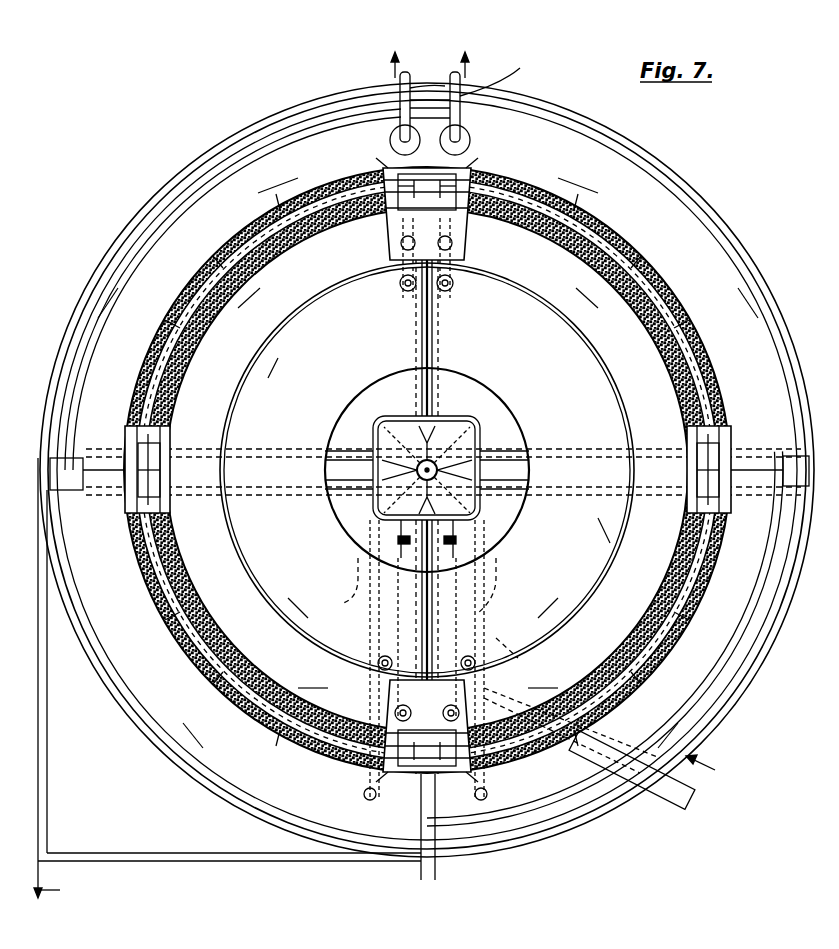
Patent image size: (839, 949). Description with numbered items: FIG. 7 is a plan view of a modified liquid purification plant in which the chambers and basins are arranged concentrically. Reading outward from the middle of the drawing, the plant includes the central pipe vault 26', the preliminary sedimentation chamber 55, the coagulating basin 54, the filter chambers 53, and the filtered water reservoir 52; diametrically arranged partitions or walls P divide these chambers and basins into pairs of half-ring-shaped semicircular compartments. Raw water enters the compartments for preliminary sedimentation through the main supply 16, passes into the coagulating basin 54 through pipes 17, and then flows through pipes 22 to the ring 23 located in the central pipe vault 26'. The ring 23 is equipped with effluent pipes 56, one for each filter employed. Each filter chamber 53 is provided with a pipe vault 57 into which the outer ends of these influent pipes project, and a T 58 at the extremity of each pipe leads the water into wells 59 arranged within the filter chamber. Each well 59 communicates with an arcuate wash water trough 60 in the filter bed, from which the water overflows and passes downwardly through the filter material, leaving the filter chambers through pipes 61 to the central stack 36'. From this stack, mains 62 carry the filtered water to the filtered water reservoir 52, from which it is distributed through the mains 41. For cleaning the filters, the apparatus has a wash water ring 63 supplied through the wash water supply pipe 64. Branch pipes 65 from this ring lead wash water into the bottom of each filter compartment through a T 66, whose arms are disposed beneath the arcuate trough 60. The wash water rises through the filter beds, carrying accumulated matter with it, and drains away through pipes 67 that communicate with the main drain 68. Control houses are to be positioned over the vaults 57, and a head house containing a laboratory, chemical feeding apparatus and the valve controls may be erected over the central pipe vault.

The main supply 16 is at (688, 797).
The pipes 17 is at (457, 290).
The pipes 22 is at (452, 552).
The ring 23 is at (460, 418).
The central pipe vault 26' is at (444, 470).
The central stack 36' is at (459, 439).
The mains 41 is at (457, 74).
The filtered water reservoir 52 is at (272, 718).
The filter chambers 53 is at (590, 222).
The coagulating basin 54 is at (662, 569).
The preliminary sedimentation chamber 55 is at (427, 470).
The effluent pipes 56 is at (434, 385).
The pipe vault 57 is at (394, 770).
The T 58 is at (397, 212).
The wells 59 is at (388, 172).
The arcuate wash water trough 60 is at (224, 268).
The pipes 61 is at (298, 462).
The mains 62 is at (486, 665).
The wash water ring 63 is at (688, 202).
The wash water supply pipe 64 is at (439, 875).
The branch pipes 65 is at (450, 112).
The T 66 is at (724, 462).
The pipes 67 is at (102, 460).
The main drain 68 is at (792, 600).
The partitions or walls P is at (442, 342).